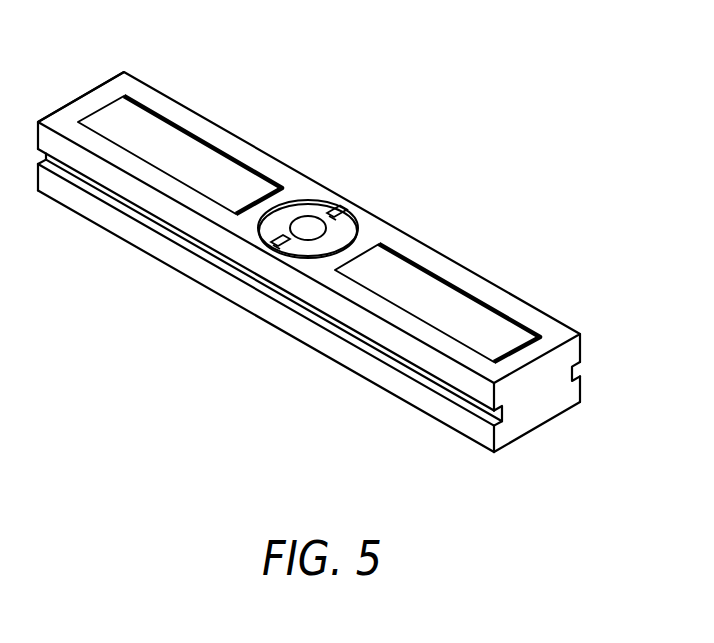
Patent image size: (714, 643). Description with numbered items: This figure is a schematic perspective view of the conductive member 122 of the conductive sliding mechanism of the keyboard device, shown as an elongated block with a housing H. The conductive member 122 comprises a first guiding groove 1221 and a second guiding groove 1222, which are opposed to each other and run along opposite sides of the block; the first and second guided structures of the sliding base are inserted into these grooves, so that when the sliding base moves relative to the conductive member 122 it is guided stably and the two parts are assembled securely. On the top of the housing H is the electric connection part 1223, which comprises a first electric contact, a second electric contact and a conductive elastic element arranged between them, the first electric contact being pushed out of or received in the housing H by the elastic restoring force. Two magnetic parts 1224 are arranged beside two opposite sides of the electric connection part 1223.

The conductive member 122 is at (530, 101).
The first guiding groove 1221 is at (592, 366).
The second guiding groove 1222 is at (466, 415).
The electric connection part 1223 is at (312, 210).
The magnetic part 1224 is at (188, 147).
The housing H is at (67, 120).